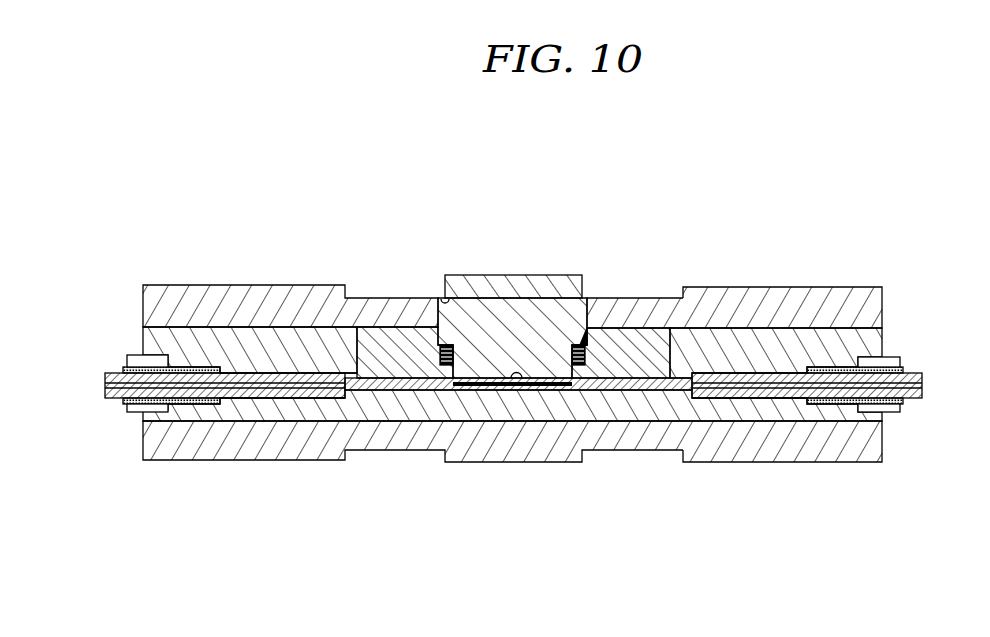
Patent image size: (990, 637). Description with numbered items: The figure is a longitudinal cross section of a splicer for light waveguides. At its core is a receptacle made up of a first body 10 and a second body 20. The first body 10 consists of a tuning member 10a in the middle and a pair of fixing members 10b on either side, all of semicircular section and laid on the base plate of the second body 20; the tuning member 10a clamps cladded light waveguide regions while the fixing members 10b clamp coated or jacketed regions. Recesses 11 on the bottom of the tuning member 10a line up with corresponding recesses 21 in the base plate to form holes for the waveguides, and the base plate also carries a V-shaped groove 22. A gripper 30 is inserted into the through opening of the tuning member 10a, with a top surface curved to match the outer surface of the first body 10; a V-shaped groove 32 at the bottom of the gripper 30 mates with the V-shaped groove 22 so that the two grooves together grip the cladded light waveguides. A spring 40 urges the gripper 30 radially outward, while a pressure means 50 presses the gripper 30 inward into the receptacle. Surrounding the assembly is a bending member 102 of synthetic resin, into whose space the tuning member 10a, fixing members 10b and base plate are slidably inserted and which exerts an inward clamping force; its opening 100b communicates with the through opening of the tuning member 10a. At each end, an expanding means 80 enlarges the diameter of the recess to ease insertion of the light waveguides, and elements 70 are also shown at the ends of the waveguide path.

The first body 10 is at (843, 327).
The tuning member 10a is at (653, 362).
The fixing members 10b is at (750, 365).
The recesses 11 is at (287, 372).
The second body 20 is at (790, 405).
The recesses 21 is at (291, 413).
The V-shaped groove 22 is at (495, 391).
The gripper 30 is at (485, 325).
The V-shaped groove 32 is at (518, 386).
The spring 40 is at (624, 327).
The pressure means 50 is at (543, 282).
The sleeve tube 70 is at (106, 398).
The expanding means 80 is at (125, 352).
The opening 100b is at (447, 303).
The bending member 102 is at (727, 437).